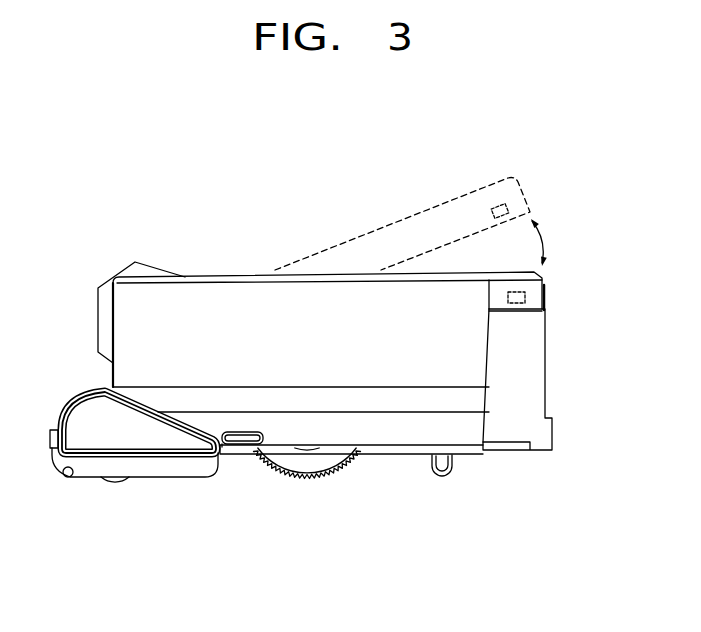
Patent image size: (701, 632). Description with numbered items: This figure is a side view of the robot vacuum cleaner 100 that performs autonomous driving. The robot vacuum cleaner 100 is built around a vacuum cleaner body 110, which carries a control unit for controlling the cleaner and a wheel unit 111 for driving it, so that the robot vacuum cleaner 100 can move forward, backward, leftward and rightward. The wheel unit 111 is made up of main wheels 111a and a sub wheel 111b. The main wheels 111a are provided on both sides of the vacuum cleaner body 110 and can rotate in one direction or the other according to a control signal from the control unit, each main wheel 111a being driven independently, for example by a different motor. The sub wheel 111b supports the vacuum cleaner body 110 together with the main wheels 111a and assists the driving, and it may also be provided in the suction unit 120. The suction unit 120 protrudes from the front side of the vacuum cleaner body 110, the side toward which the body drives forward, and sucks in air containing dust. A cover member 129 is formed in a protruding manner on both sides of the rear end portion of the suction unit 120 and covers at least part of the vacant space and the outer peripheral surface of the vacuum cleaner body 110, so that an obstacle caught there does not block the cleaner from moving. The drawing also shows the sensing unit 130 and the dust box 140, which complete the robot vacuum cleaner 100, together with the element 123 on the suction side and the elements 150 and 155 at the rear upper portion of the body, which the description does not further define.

The robot vacuum cleaner 100 is at (136, 179).
The vacuum cleaner body 110 is at (262, 306).
The wheel unit 111 is at (413, 550).
The main wheels 111a is at (328, 462).
The sub wheel 111b is at (438, 477).
The suction unit 120 is at (157, 438).
The front caster 123 is at (63, 478).
The cover member 129 is at (243, 441).
The sensing unit 130 is at (127, 267).
The dust box 140 is at (520, 363).
The openable cover 150 is at (550, 283).
The cover magnet/sensor 155 is at (510, 292).